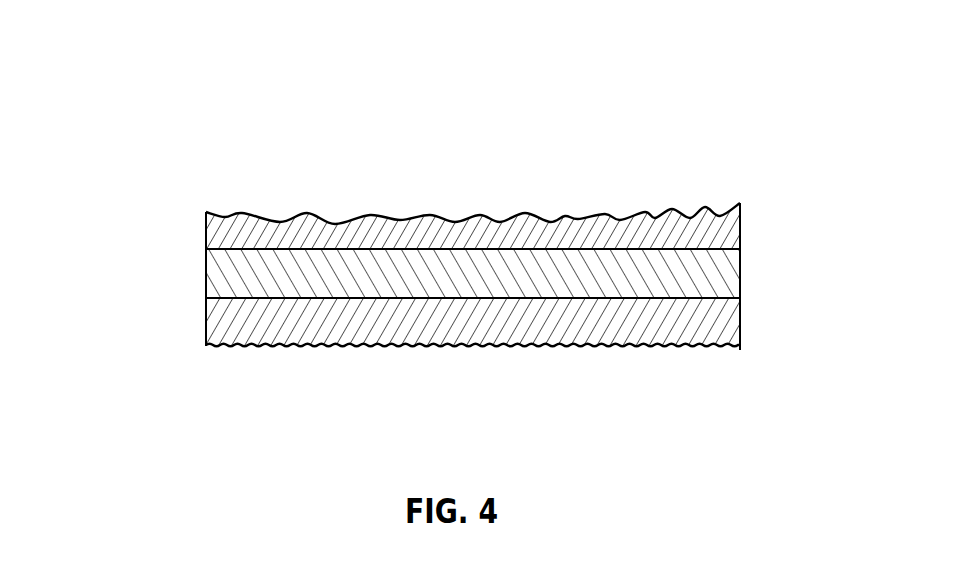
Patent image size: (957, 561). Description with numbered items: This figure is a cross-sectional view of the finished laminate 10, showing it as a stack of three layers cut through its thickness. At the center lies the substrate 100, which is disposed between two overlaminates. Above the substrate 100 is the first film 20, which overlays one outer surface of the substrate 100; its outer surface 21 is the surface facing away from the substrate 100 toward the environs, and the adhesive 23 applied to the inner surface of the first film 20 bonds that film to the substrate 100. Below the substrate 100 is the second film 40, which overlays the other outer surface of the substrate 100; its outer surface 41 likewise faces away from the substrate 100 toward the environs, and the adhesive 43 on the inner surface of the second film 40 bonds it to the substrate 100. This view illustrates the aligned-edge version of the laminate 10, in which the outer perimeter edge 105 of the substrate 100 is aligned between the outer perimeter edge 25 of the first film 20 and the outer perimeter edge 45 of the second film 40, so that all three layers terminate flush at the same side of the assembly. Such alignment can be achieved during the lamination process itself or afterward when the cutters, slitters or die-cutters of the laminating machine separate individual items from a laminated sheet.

The laminate 10 is at (157, 102).
The first film 20 is at (740, 237).
The outer surface 21 is at (578, 218).
The adhesive 23 is at (315, 242).
The outer perimeter edge 25 is at (206, 233).
The substrate 100 is at (740, 287).
The outer perimeter edge 105 is at (206, 273).
The second film 40 is at (740, 335).
The outer surface 41 is at (622, 347).
The adhesive 43 is at (300, 300).
The outer perimeter edge 45 is at (206, 320).